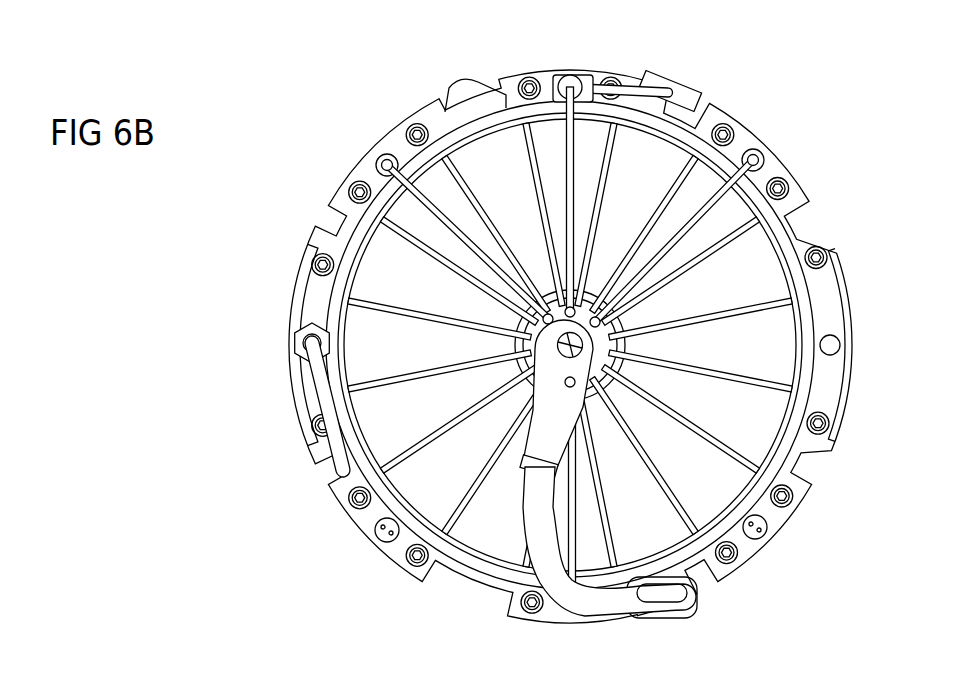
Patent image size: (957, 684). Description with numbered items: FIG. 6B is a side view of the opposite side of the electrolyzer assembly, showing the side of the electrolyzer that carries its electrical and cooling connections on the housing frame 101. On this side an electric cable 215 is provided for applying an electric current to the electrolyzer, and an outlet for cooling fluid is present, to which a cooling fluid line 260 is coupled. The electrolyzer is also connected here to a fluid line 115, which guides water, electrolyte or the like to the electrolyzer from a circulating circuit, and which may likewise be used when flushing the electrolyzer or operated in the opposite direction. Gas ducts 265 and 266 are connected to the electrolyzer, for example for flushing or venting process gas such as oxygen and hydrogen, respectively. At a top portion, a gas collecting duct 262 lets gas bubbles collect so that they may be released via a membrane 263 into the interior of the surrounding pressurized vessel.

The housing frame 101 is at (760, 437).
The fluid line 115 is at (557, 104).
The electric cable 215 is at (530, 527).
The cooling fluid line 260 is at (333, 461).
The gas collecting duct 262 is at (641, 84).
The membrane 263 is at (700, 102).
The gas duct 265 is at (747, 180).
The gas duct 266 is at (403, 183).